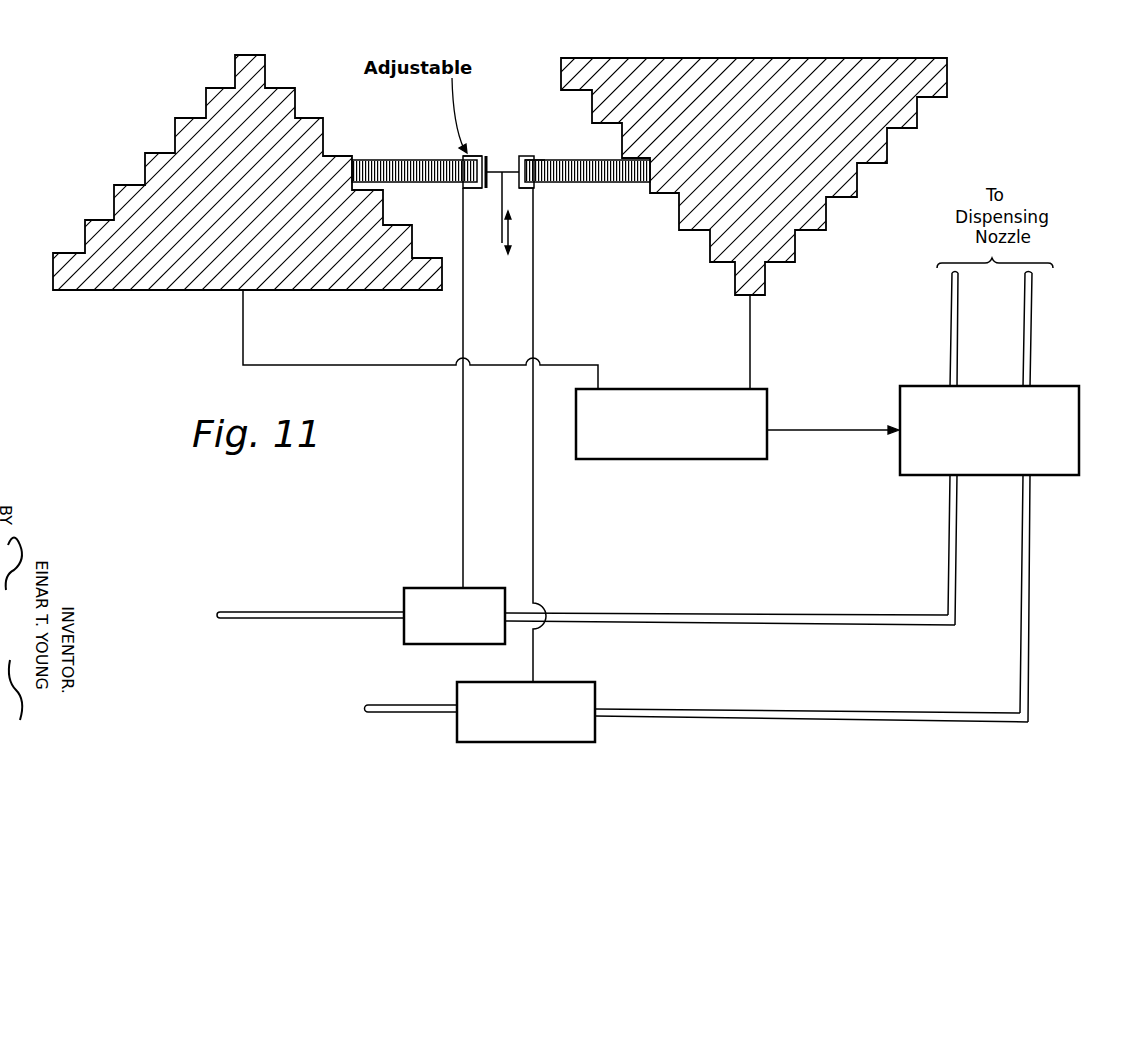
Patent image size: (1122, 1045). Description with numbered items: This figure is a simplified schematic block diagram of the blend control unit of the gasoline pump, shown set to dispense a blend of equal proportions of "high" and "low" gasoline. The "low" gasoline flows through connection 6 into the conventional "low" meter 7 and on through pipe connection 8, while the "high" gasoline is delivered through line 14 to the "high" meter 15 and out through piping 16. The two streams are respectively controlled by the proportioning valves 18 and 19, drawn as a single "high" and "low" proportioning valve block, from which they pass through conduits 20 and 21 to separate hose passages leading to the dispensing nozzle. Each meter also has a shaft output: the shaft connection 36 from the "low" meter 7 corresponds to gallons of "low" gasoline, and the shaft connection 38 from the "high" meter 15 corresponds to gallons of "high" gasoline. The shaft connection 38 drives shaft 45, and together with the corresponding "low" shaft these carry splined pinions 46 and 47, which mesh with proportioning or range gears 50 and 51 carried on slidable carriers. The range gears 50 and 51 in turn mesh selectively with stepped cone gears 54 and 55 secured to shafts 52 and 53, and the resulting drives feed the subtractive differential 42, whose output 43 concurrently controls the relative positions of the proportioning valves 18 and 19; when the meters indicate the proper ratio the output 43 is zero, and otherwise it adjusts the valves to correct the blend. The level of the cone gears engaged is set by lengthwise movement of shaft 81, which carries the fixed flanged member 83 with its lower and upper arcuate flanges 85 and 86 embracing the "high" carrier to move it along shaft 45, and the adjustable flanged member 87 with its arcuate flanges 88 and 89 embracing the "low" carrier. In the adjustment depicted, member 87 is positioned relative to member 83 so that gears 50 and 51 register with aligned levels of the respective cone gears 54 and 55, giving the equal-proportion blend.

The connection 6 is at (337, 610).
The "low" meter 7 is at (442, 587).
The pipe connection 8 is at (787, 616).
The line 14 is at (395, 705).
The "high" meter 15 is at (577, 682).
The piping 16 is at (732, 712).
The "low" proportioning valve 18 is at (944, 447).
The "high" proportioning valve 19 is at (903, 458).
The conduit 20 is at (950, 300).
The conduit 21 is at (1025, 318).
The shaft connection 36 is at (416, 388).
The shaft connection 38 is at (576, 435).
The subtractive differential 42 is at (758, 408).
The output 43 is at (837, 427).
The shaft 45 is at (535, 517).
The pinion 46 is at (458, 160).
The pinion 47 is at (541, 163).
The proportioning gear 50 is at (390, 160).
The proportioning gear 51 is at (607, 183).
The shaft 52 is at (245, 323).
The shaft 53 is at (753, 338).
The cone gear 54 is at (175, 126).
The cone gear 55 is at (918, 122).
The shaft 81 is at (500, 218).
The fixed flanged member 83 is at (510, 170).
The lower arcuate flange 85 is at (530, 190).
The upper arcuate flange 86 is at (530, 156).
The adjustable flanged member 87 is at (488, 160).
The lower arcuate flange 88 is at (473, 190).
The upper arcuate flange 89 is at (472, 156).